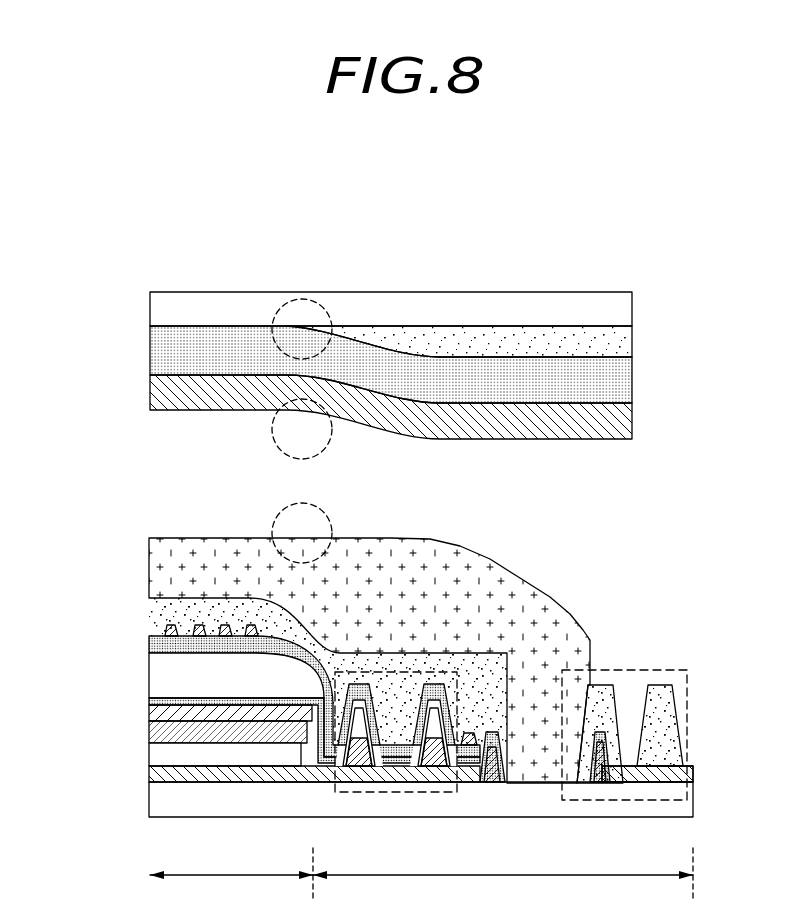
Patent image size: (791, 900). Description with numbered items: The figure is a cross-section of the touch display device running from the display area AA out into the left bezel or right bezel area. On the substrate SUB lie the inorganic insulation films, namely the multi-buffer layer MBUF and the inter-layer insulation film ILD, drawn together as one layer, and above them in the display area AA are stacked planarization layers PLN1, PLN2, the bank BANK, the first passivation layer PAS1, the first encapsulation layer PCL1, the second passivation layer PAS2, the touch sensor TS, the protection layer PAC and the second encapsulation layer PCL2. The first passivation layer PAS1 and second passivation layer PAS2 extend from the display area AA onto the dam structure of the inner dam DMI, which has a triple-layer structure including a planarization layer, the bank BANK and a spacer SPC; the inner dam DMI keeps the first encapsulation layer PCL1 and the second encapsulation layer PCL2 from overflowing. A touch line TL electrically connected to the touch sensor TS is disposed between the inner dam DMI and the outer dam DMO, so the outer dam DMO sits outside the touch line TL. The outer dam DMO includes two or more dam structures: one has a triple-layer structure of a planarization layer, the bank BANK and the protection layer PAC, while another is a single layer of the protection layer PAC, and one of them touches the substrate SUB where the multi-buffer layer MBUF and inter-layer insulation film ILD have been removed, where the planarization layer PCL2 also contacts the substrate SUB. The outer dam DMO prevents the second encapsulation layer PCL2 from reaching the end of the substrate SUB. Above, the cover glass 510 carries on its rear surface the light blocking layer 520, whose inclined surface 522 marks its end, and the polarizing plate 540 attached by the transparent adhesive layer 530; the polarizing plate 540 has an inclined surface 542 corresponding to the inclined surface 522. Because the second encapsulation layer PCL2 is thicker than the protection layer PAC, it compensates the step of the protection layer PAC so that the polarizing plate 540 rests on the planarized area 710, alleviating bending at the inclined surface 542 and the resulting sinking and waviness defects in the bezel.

The cover glass 510 is at (635, 312).
The light blocking layer 520 is at (635, 343).
The inclined surface of the light blocking layer 522 is at (328, 313).
The transparent adhesive layer 530 is at (635, 378).
The polarizing plate 540 is at (635, 424).
The inclined surface of the polarizing plate 542 is at (330, 440).
The planarized area 710 is at (328, 522).
The second encapsulation layer PCL2 is at (149, 571).
The protection layer PAC is at (149, 606).
The touch sensor TS is at (149, 626).
The second passivation layer PAS2 is at (149, 645).
The first encapsulation layer PCL1 is at (149, 674).
The first passivation layer PAS1 is at (149, 694).
The bank BANK is at (149, 714).
The second planarization layer PLN2 is at (149, 735).
The first planarization layer PLN1 is at (149, 757).
The inter-layer insulation film ILD is at (149, 776).
The multi-buffer layer MBUF is at (421, 774).
The substrate SUB is at (149, 808).
The inner dam DMI is at (420, 672).
The outer dam DMO is at (636, 670).
The touch line TL is at (470, 730).
The spacer SPC is at (357, 722).
The display area AA is at (231, 874).